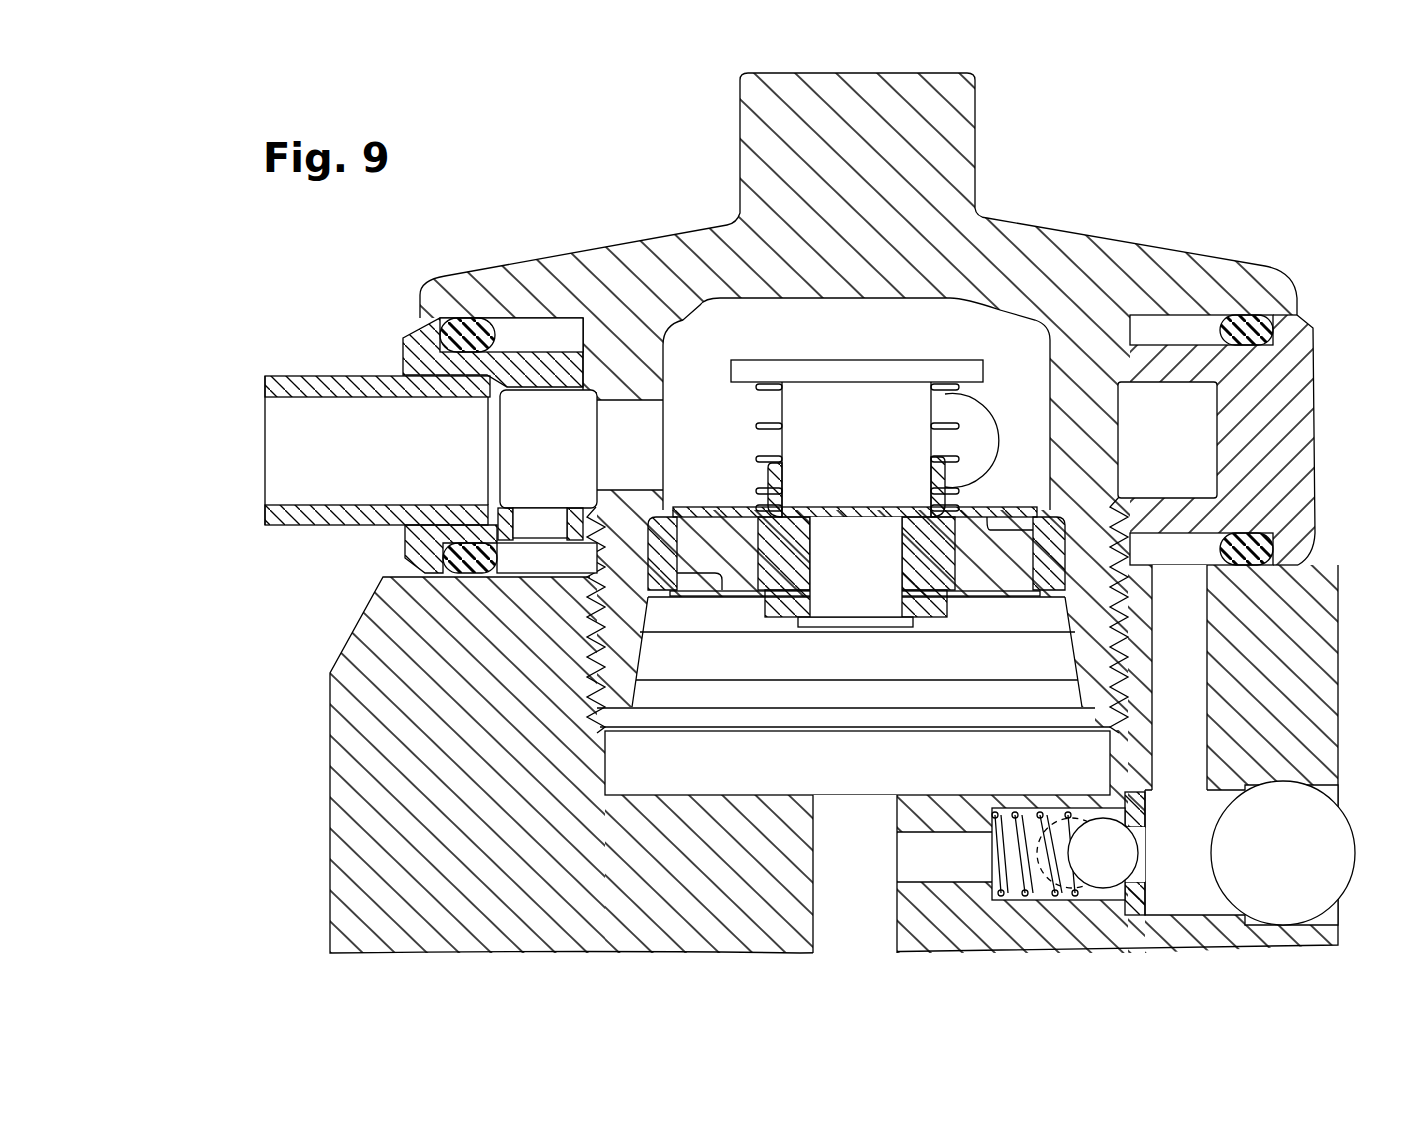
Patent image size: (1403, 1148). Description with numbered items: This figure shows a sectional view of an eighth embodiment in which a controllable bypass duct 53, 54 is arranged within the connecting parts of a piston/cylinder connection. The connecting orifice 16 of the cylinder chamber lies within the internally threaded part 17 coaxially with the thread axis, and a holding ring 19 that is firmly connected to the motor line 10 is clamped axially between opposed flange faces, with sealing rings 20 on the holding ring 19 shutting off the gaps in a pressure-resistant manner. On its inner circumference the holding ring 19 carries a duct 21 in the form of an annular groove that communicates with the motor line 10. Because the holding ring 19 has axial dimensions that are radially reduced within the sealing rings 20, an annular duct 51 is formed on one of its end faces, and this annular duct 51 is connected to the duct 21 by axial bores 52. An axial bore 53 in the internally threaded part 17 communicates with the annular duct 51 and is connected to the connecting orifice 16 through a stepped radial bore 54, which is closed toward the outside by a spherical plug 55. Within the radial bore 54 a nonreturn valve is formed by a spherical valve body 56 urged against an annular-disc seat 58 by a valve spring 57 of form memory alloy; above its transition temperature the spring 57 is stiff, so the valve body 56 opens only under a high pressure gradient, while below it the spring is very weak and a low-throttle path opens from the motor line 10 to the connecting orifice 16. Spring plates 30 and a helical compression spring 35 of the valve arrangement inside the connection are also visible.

The motor line 10 is at (302, 385).
The connecting orifice 16 is at (842, 818).
The internally threaded part 17 is at (358, 688).
The holding ring 19 is at (1305, 368).
The sealing rings 20 is at (1283, 300).
The duct 21 is at (1212, 432).
The spring plates 30 is at (1000, 590).
The helical compression spring 35 is at (757, 428).
The annular duct 51 is at (517, 568).
The axial bores 52 is at (545, 520).
The axial bore 53 is at (1200, 738).
The stepped radial bore 54 is at (949, 874).
The spherical plug 55 is at (1298, 870).
The spherical valve body 56 is at (1108, 838).
The valve spring 57 is at (1018, 812).
The seat 58 is at (1142, 904).